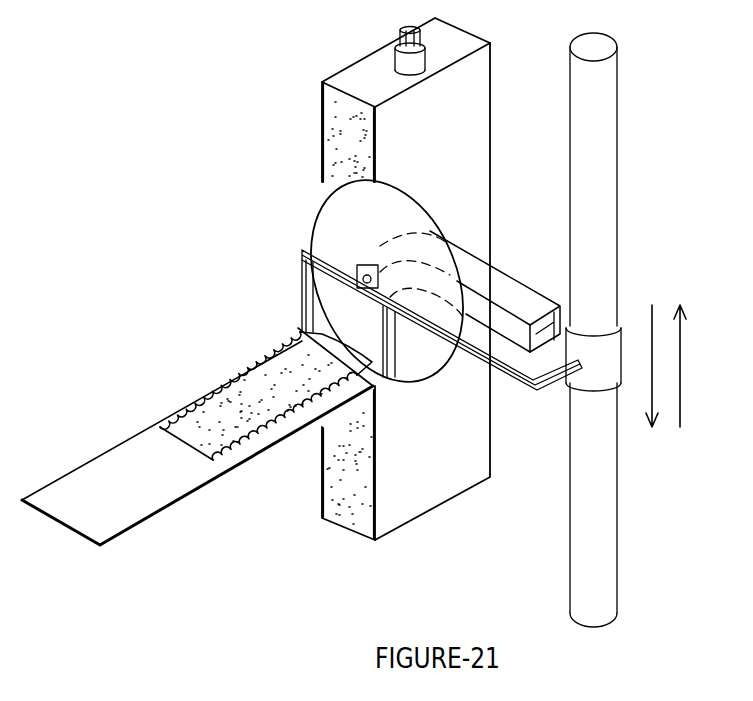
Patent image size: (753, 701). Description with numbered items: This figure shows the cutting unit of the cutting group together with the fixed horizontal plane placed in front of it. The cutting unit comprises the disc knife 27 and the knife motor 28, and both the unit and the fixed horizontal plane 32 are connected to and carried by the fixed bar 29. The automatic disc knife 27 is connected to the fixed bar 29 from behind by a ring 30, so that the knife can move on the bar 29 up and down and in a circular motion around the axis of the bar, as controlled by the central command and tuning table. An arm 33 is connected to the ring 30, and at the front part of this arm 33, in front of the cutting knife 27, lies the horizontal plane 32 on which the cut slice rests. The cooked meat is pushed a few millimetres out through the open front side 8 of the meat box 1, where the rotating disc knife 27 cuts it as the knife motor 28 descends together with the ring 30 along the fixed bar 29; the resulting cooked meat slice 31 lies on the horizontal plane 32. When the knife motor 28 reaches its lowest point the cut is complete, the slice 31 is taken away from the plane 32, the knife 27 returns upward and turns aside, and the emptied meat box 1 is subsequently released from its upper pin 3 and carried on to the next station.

The meat box 1 is at (418, 112).
The upper pin 3 is at (410, 58).
The open front side 8 is at (345, 117).
The disc knife 27 is at (330, 220).
The knife motor 28 is at (518, 298).
The fixed bar 29 is at (600, 160).
The ring 30 is at (605, 357).
The cooked meat slice 31 is at (258, 402).
The horizontal plane 32 is at (127, 493).
The arm 33 is at (536, 383).